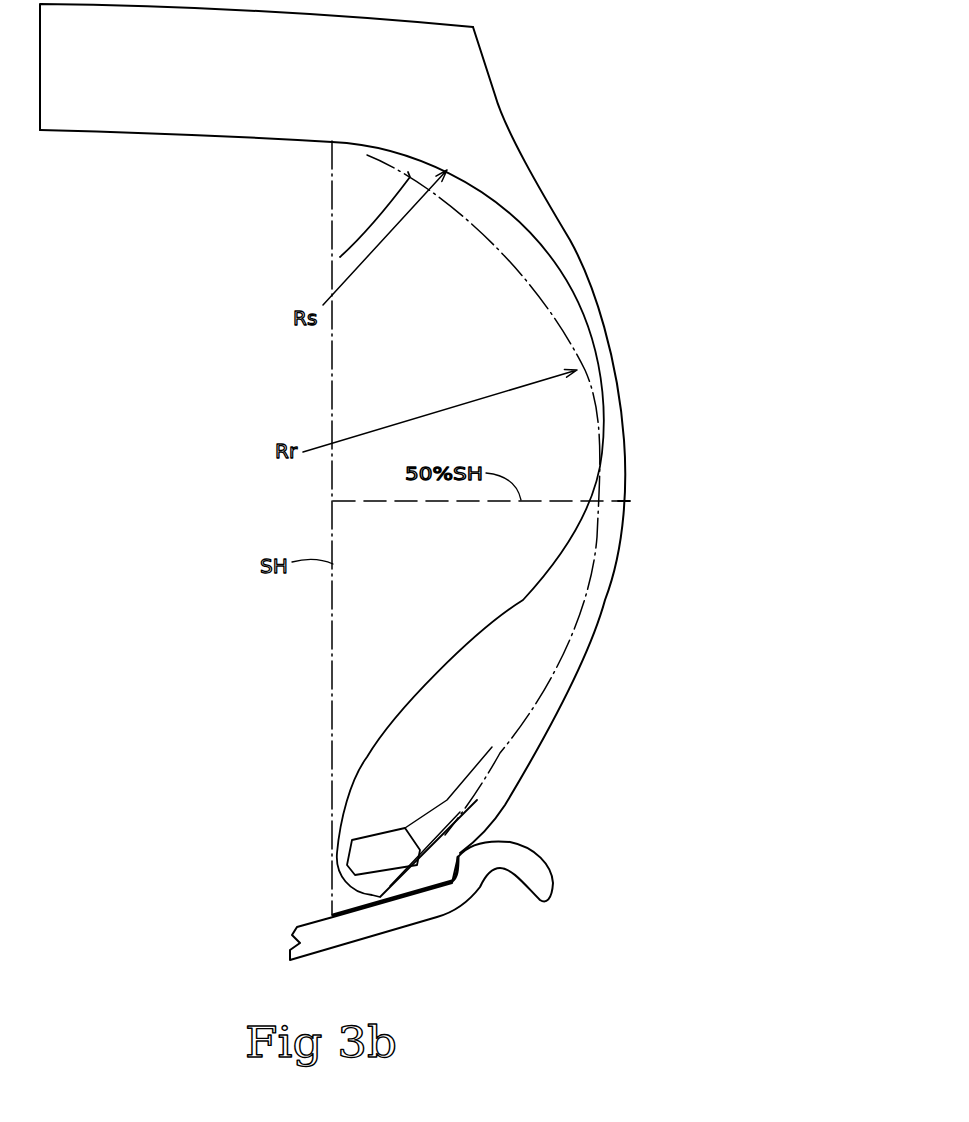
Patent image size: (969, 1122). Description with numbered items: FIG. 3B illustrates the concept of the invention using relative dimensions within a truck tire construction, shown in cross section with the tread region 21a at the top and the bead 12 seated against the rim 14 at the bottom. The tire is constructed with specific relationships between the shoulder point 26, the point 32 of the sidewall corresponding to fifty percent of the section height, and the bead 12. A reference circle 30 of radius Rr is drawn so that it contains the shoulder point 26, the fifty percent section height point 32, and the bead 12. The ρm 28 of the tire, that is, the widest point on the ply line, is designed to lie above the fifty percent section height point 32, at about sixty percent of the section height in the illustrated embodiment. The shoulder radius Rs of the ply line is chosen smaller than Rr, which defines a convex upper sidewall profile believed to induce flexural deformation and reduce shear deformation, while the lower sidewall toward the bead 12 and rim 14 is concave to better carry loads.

The tread 21a is at (447, 122).
The shoulder point 26 is at (332, 143).
The ρm (widest point on the ply line) 28 is at (625, 403).
The reference circle 30 is at (340, 257).
The point of the sidewall at 50% of the section height 32 is at (623, 501).
The annular bead 12 is at (387, 853).
The rim 14 is at (478, 895).